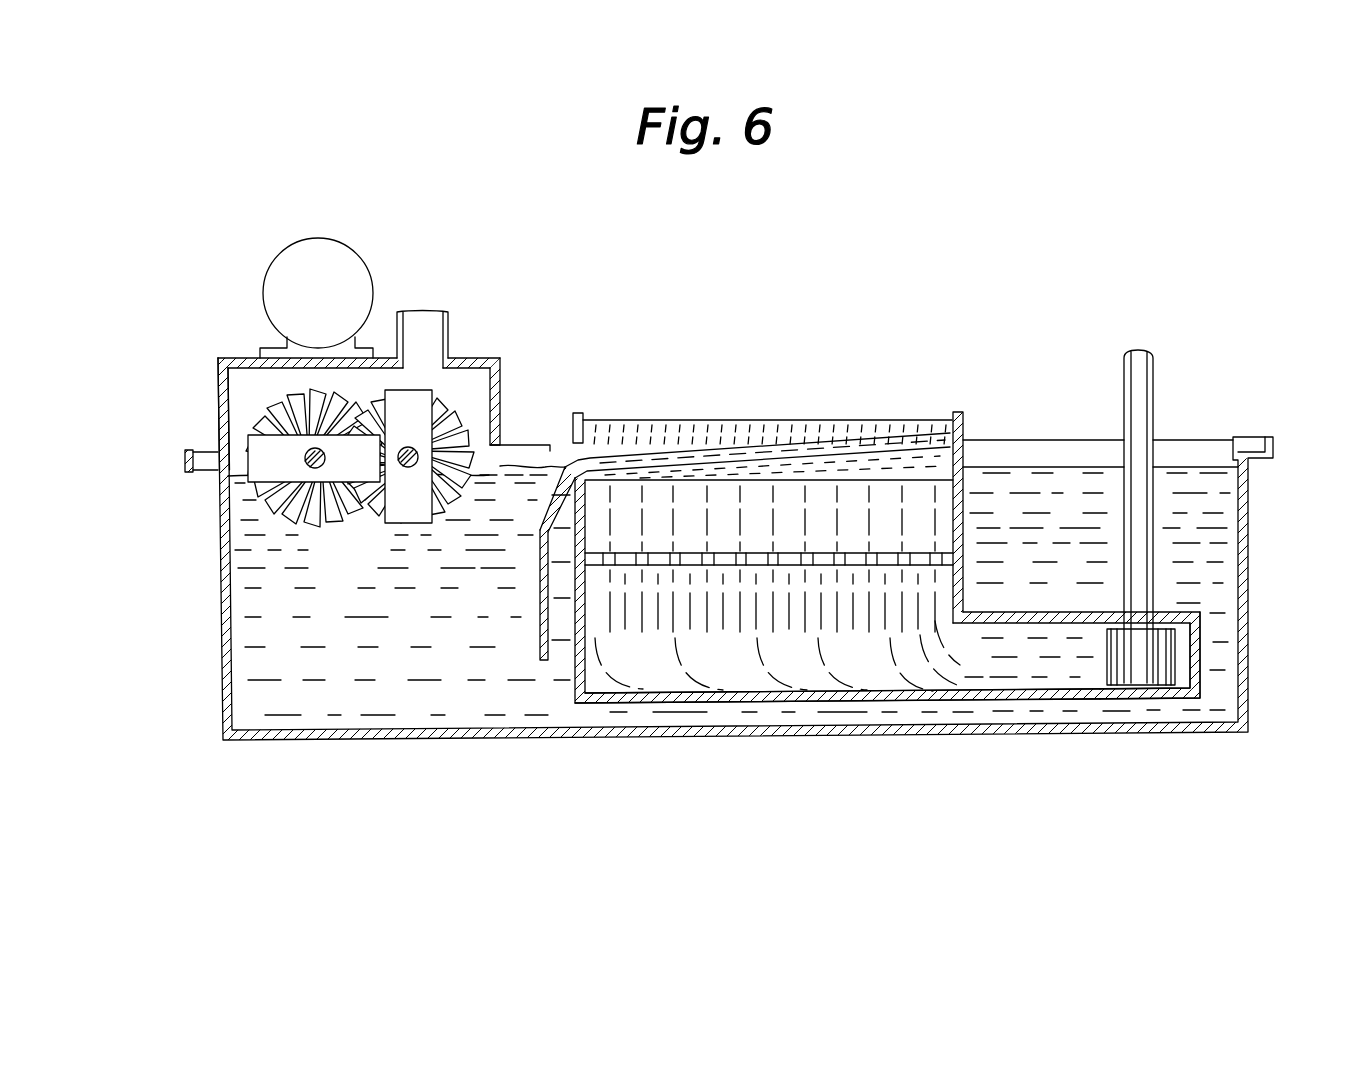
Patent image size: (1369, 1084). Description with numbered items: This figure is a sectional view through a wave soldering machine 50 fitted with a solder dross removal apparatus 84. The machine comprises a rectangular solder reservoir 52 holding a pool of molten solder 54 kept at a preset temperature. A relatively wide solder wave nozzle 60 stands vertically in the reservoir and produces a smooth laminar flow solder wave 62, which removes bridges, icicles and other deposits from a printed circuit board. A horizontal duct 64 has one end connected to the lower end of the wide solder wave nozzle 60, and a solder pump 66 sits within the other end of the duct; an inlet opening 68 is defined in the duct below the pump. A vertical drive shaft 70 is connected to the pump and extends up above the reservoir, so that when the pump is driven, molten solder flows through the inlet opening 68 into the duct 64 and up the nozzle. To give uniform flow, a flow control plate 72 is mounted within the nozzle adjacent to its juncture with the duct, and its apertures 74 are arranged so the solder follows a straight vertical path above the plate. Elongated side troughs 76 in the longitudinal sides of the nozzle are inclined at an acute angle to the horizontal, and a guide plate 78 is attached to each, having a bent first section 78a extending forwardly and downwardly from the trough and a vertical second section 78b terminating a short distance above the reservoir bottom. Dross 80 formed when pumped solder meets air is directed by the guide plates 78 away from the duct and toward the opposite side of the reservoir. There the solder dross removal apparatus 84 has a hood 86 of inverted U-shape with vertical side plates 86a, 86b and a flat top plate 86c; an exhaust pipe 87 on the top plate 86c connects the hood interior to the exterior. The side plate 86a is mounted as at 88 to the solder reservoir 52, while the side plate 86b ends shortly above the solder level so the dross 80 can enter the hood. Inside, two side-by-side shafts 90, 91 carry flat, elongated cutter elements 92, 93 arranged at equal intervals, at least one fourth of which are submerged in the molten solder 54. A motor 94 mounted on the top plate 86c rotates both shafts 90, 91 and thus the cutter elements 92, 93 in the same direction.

The wave soldering machine 50 is at (962, 284).
The solder reservoir 52 is at (222, 580).
The molten solder 54 is at (733, 590).
The wide solder wave nozzle 60 is at (962, 440).
The smooth laminar flow solder wave 62 is at (680, 420).
The horizontal duct 64 is at (1028, 690).
The solder pump 66 is at (1163, 658).
The inlet opening 68 is at (1157, 694).
The vertical drive shaft 70 is at (1154, 378).
The flow control plate 72 is at (887, 580).
The apertures 74 is at (805, 548).
The side troughs 76 is at (750, 466).
The guide plate 78 is at (508, 591).
The bent first section 78a is at (540, 530).
The vertical second section 78b is at (540, 603).
The dross 80 is at (497, 445).
The solder dross removal apparatus 84 is at (347, 470).
The hood 86 is at (347, 338).
The side plate 86a is at (218, 395).
The side plate 86b is at (502, 443).
The top plate 86c is at (240, 358).
The exhaust pipe 87 is at (448, 312).
The mounting 88 is at (186, 452).
The shaft 90 is at (312, 467).
The shaft 91 is at (403, 467).
The cutter elements 92 is at (283, 463).
The cutter elements 93 is at (434, 408).
The motor 94 is at (353, 296).